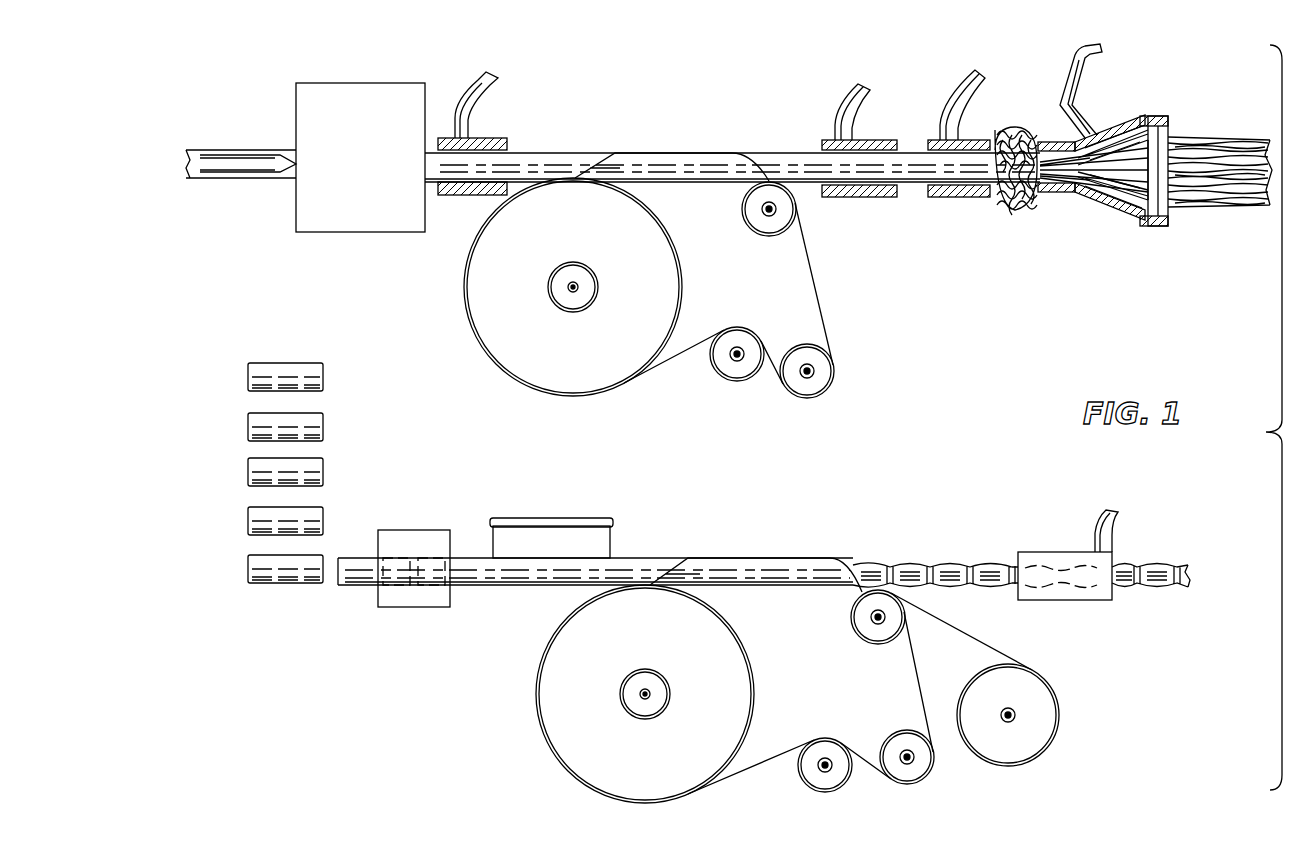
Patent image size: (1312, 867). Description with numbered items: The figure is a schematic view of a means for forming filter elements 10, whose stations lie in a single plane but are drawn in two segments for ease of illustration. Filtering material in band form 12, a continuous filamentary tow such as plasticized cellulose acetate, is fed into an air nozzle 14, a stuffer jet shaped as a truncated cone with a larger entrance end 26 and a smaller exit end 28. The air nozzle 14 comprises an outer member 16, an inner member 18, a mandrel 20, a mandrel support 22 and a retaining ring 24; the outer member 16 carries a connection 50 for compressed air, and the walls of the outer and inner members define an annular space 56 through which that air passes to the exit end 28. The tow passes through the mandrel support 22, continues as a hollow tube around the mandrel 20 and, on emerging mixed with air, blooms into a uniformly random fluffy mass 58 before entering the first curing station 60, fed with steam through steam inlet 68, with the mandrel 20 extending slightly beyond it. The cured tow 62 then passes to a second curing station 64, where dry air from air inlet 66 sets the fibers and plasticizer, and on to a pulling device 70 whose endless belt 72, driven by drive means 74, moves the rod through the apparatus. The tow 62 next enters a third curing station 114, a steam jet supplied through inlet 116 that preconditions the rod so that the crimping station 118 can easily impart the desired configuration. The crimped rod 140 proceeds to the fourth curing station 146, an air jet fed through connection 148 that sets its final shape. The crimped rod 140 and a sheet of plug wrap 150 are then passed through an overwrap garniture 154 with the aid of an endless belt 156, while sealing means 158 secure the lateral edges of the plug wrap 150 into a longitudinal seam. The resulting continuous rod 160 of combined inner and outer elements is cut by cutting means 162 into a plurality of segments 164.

The means for forming filter elements 10 is at (763, 104).
The filtering material in band form 12 is at (1220, 145).
The air nozzle 14 is at (1097, 212).
The outer member 16 is at (1136, 216).
The inner member 18 is at (1150, 226).
The mandrel 20 is at (1118, 133).
The mandrel support 22 is at (1166, 212).
The retaining ring 24 is at (1163, 226).
The entrance end 26 is at (1176, 119).
The exit end 28 is at (1046, 199).
The connection for compressed air 50 is at (1063, 118).
The annular space 56 is at (1103, 130).
The fluffy mass 58 is at (1003, 128).
The first curing station 60 is at (962, 198).
The cured tow 62 is at (916, 168).
The second curing station 64 is at (868, 198).
The air inlet 66 is at (848, 100).
The steam inlet 68 is at (966, 90).
The pulling device 70 is at (684, 145).
The endless belt 72 is at (684, 352).
The drive means 74 is at (818, 372).
The third curing station 114 is at (476, 198).
The inlet 116 is at (458, 100).
The crimping station 118 is at (354, 80).
The crimped rod 140 is at (214, 150).
The fourth curing station 146 is at (1070, 528).
The connection 148 is at (1095, 520).
The plug wrap 150 is at (985, 640).
The overwrap garniture 154 is at (763, 558).
The endless belt 156 is at (918, 684).
The sealing means 158 is at (541, 519).
The continuous rod 160 is at (473, 557).
The cutting means 162 is at (420, 609).
The segments 164 is at (324, 518).